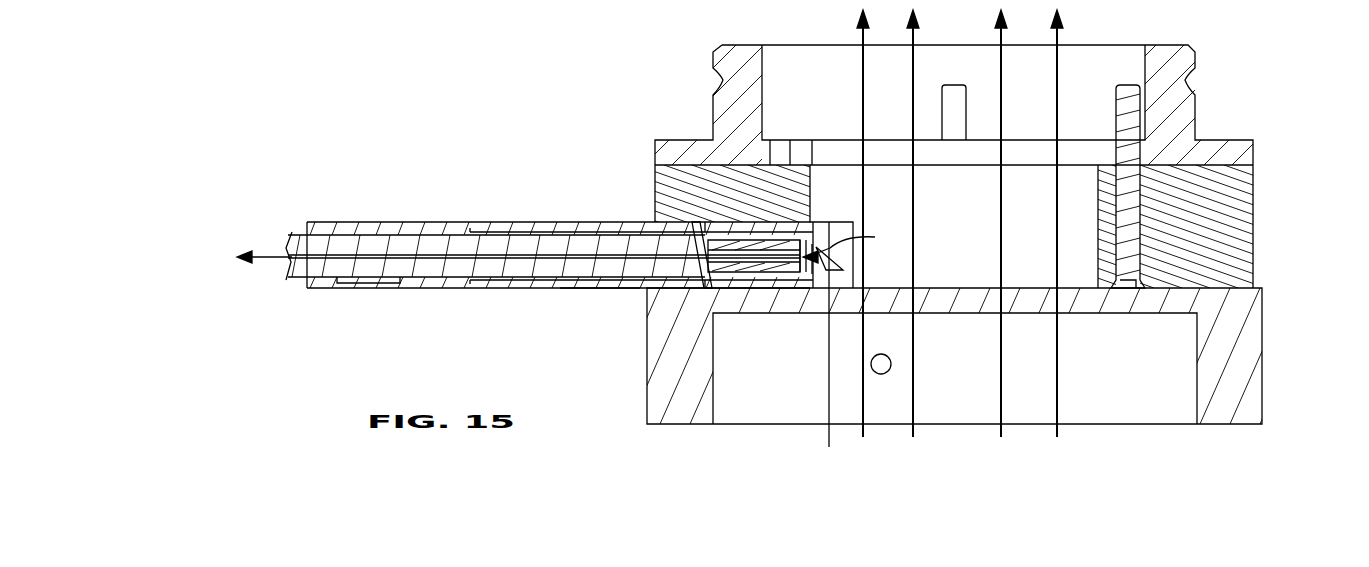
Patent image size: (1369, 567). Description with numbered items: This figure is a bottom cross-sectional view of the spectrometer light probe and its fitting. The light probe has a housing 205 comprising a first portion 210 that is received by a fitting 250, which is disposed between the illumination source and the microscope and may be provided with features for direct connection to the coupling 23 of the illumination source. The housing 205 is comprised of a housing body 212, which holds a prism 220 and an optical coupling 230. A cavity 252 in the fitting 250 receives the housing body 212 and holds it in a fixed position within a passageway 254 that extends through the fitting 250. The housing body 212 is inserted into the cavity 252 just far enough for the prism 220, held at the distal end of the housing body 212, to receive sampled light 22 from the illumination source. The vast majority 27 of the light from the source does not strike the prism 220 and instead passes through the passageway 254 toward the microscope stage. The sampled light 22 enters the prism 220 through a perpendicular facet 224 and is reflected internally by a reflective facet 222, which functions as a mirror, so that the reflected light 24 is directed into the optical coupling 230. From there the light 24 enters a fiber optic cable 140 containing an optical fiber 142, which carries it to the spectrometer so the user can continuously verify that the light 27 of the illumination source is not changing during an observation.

The sampled light 22 is at (829, 447).
The coupling of illumination source 23 is at (1264, 350).
The reflected light 24 is at (270, 252).
The vast majority of light 27 is at (1065, 440).
The fiber optic cable 140 is at (355, 222).
The optical fiber 142 is at (427, 253).
The housing 205 is at (637, 212).
The first portion 210 is at (494, 221).
The housing body 212 is at (585, 292).
The prism 220 is at (822, 272).
The reflective facet 222 is at (813, 252).
The perpendicular facet 224 is at (829, 272).
The optical coupling 230 is at (700, 290).
The fitting 250 is at (1255, 249).
The cavity 252 is at (703, 222).
The passageway 254 is at (1088, 180).